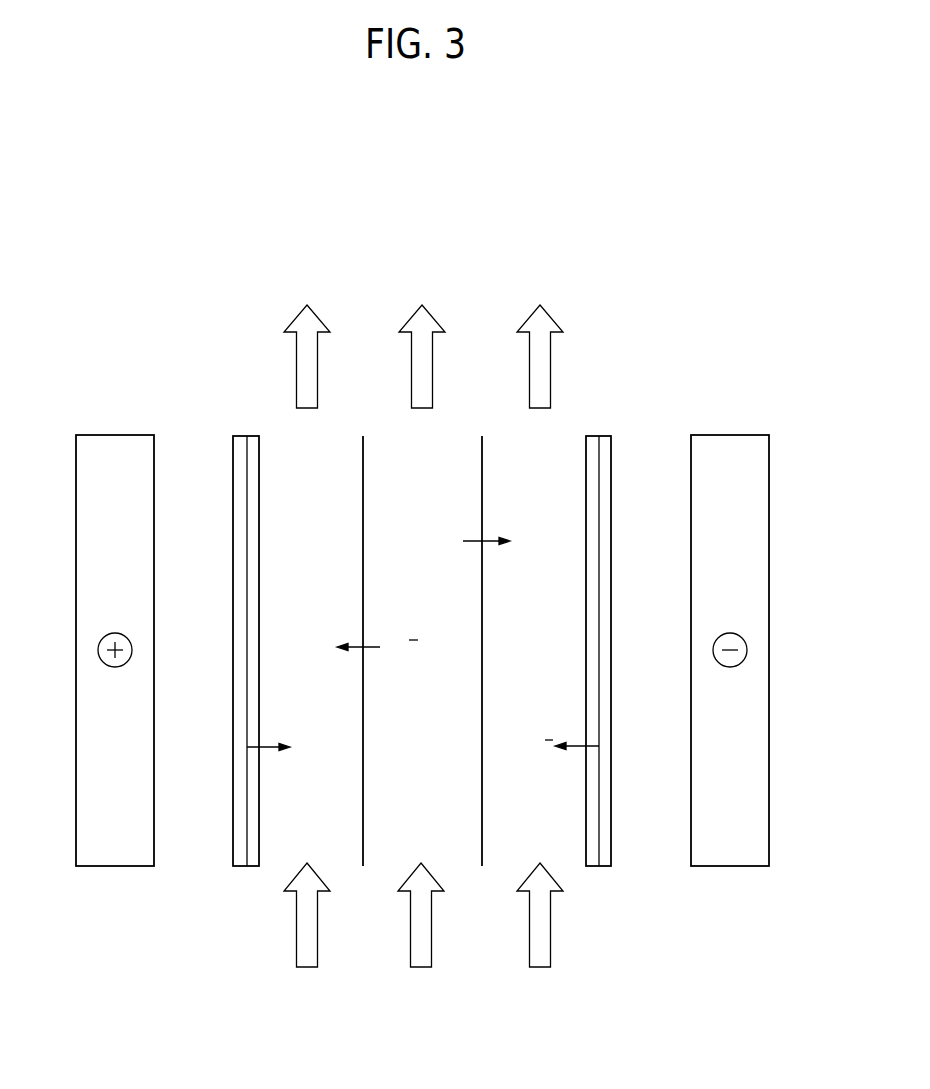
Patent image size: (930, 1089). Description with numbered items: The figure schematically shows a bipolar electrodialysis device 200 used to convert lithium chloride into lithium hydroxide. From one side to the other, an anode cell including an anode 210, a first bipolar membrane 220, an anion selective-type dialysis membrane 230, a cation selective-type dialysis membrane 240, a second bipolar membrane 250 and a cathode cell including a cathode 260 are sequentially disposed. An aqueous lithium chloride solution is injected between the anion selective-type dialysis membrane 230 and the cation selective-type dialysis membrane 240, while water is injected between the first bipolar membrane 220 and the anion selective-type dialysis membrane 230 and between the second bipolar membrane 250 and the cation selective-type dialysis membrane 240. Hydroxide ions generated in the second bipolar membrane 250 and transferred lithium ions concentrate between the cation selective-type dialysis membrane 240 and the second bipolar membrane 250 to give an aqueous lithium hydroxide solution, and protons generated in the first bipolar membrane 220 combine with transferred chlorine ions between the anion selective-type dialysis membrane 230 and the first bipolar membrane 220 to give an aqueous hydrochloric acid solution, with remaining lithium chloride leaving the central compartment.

The bipolar electrodialysis device 200 is at (429, 198).
The anode 210 is at (115, 632).
The first bipolar membrane 220 is at (245, 632).
The anion selective-type dialysis membrane 230 is at (363, 632).
The cation selective-type dialysis membrane 240 is at (482, 632).
The second bipolar membrane 250 is at (598, 632).
The cathode 260 is at (730, 632).